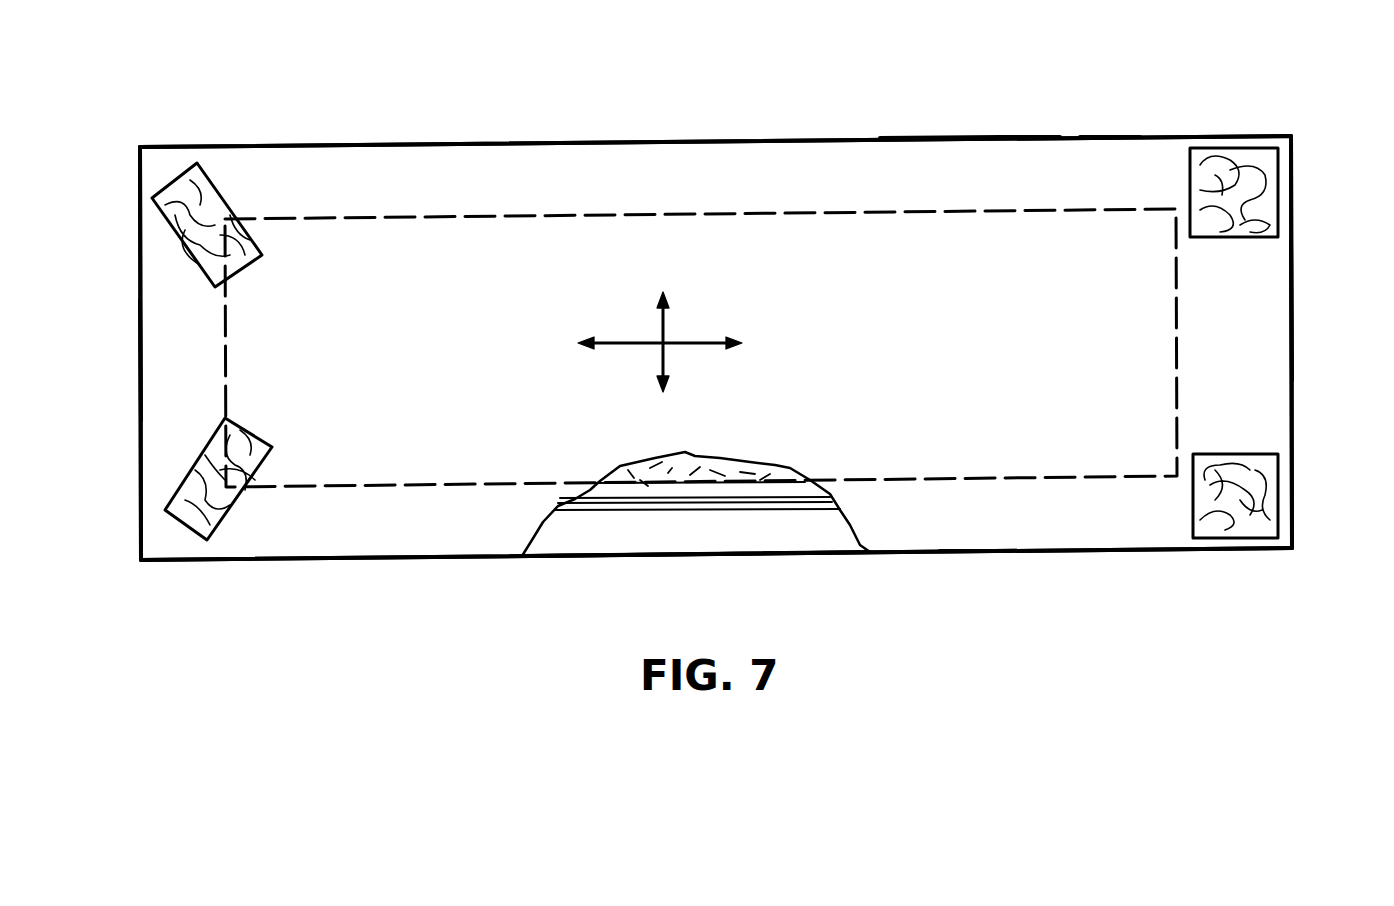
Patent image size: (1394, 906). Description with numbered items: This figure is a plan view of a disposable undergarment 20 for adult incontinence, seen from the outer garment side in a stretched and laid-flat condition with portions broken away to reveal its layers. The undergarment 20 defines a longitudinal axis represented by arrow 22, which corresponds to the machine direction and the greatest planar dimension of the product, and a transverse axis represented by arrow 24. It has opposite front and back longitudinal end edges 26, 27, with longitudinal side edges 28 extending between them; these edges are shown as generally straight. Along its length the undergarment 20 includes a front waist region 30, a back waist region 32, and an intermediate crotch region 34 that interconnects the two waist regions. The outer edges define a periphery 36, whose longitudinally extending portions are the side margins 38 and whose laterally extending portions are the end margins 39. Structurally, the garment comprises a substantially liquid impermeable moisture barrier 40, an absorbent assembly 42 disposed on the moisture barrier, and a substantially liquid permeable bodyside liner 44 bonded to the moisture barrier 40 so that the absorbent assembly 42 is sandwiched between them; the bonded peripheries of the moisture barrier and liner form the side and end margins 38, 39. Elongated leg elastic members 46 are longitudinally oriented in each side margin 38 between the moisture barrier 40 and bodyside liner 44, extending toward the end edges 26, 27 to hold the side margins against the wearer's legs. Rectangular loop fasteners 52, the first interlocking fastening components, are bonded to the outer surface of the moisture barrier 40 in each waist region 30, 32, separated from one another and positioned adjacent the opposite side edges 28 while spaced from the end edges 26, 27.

The disposable undergarment 20 is at (547, 132).
The longitudinal axis 22 is at (631, 340).
The transverse axis 24 is at (668, 352).
The front longitudinal end edge 26 is at (137, 322).
The back longitudinal end edge 27 is at (1293, 260).
The longitudinal side edges 28 is at (757, 140).
The front waist region 30 is at (165, 416).
The back waist region 32 is at (1268, 351).
The crotch region 34 is at (886, 168).
The periphery 36 is at (1022, 157).
The side margins 38 is at (1108, 165).
The end margins 39 is at (155, 358).
The moisture barrier 40 is at (440, 361).
The absorbent assembly 42 is at (643, 470).
The bodyside liner 44 is at (537, 558).
The leg elastic members 46 is at (743, 498).
The first interlocking fastening components 52 is at (180, 185).